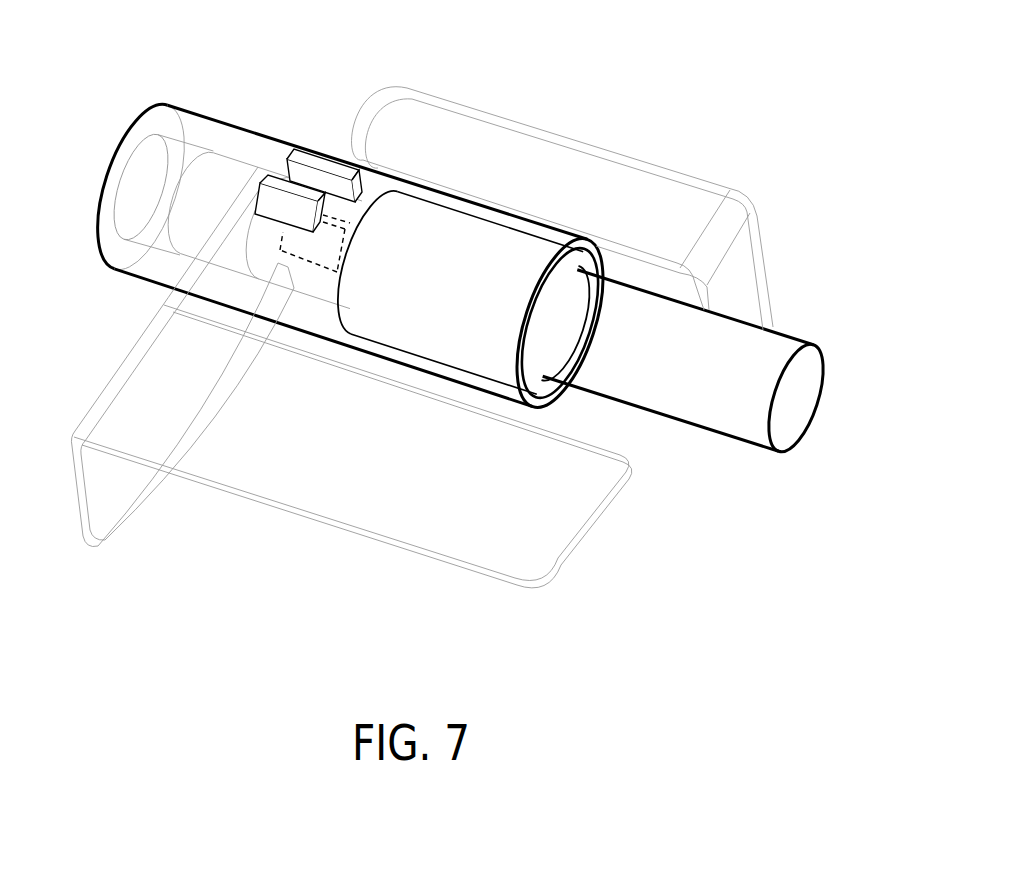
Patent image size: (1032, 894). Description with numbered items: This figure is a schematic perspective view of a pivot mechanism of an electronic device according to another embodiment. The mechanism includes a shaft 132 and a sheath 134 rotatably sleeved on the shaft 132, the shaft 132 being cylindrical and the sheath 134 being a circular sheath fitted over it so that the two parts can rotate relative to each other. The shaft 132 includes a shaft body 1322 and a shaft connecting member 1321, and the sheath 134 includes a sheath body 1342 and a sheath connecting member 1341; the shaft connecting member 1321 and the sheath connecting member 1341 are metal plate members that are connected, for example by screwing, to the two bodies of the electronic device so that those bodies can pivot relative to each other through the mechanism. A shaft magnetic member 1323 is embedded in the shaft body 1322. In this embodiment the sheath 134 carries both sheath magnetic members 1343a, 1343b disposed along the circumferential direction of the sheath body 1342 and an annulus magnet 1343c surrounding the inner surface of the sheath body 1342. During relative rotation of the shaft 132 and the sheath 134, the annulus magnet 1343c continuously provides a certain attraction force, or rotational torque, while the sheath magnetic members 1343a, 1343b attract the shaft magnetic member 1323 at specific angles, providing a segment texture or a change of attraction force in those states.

The sheath 134 is at (351, 308).
The sheath body 1342 is at (192, 100).
The sheath connecting member 1341 is at (340, 485).
The sheath magnetic member 1343a is at (310, 163).
The sheath magnetic member 1343b is at (360, 225).
The annulus magnet 1343c is at (463, 207).
The shaft 132 is at (475, 262).
The shaft connecting member 1321 is at (563, 140).
The shaft body 1322 is at (782, 350).
The shaft magnetic member 1323 is at (282, 208).